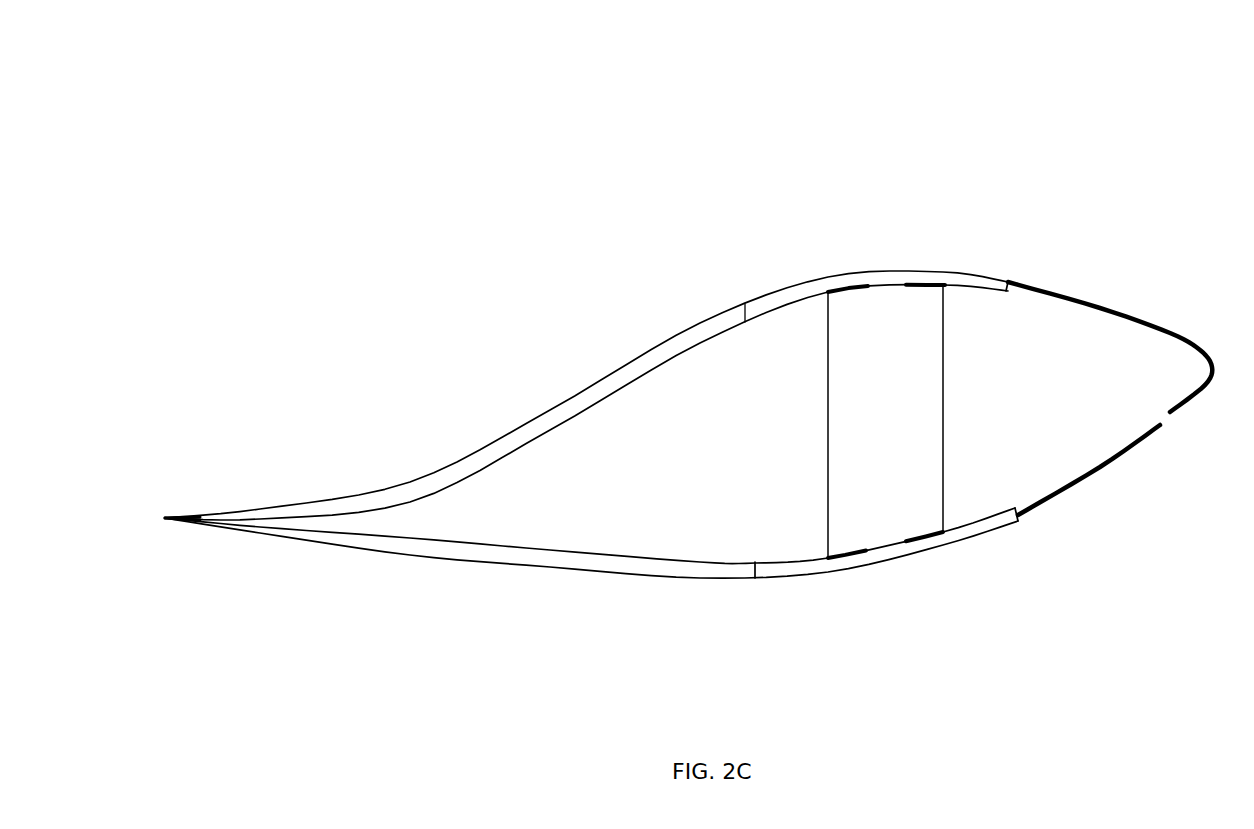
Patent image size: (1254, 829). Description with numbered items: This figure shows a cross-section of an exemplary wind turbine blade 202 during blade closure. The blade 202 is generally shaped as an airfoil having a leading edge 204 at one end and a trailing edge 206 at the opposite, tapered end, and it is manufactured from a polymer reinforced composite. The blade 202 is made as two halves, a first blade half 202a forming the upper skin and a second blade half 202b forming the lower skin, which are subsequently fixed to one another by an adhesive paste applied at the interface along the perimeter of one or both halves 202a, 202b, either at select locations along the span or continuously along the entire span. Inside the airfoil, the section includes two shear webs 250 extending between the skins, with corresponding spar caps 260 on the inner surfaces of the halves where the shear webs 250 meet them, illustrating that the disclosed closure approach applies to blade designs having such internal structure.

The wind turbine blade 202 is at (372, 154).
The first blade half 202a is at (747, 318).
The second blade half 202b is at (708, 573).
The leading edge 204 is at (1200, 398).
The trailing edge 206 is at (173, 515).
The shear web 250 is at (940, 333).
The spar cap 260 is at (903, 559).